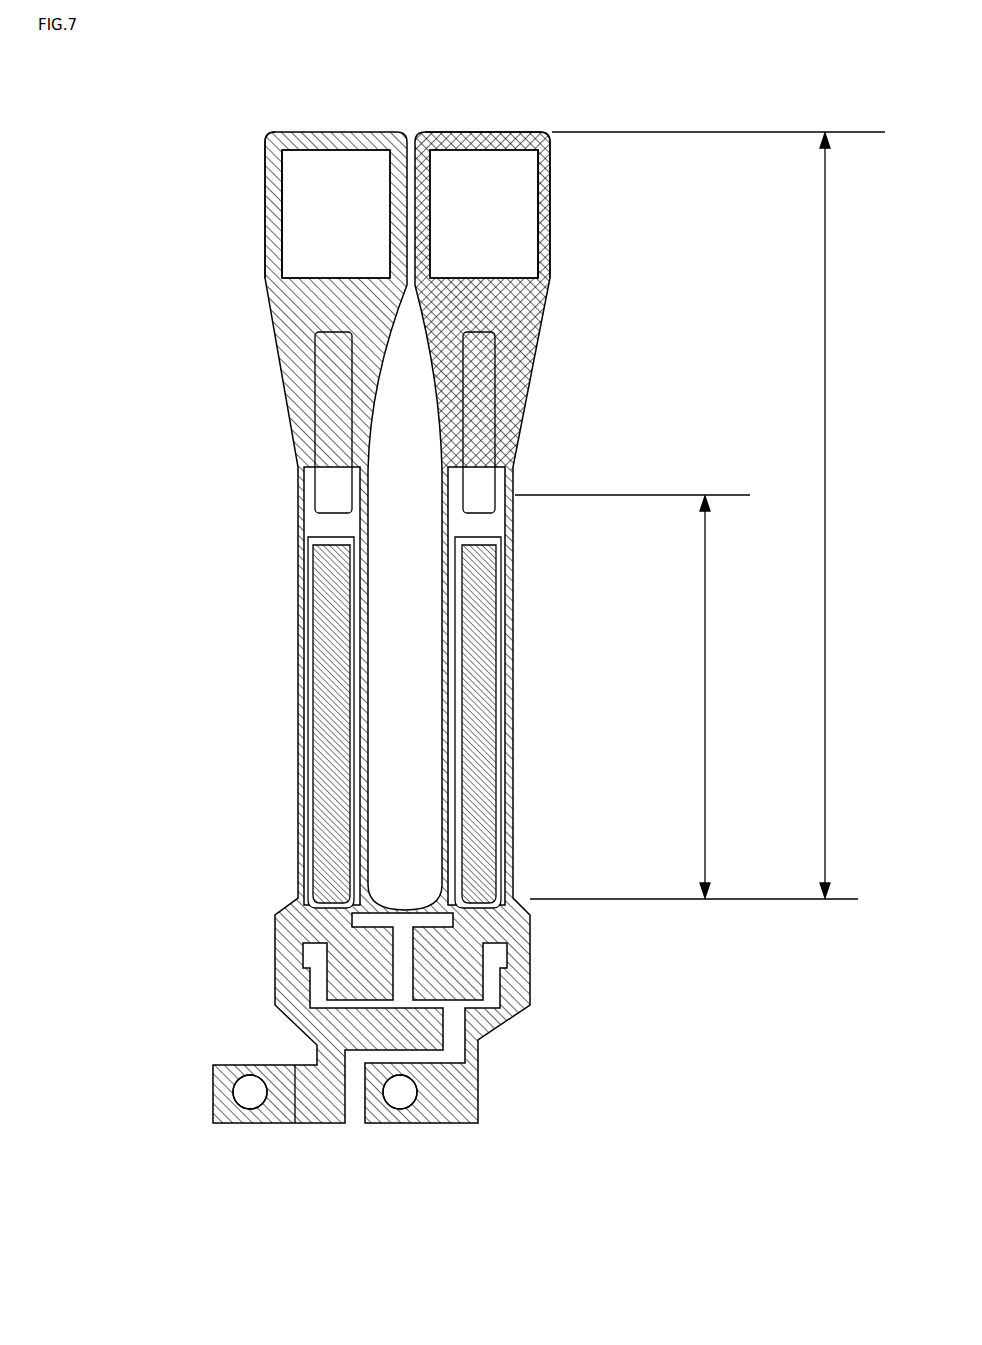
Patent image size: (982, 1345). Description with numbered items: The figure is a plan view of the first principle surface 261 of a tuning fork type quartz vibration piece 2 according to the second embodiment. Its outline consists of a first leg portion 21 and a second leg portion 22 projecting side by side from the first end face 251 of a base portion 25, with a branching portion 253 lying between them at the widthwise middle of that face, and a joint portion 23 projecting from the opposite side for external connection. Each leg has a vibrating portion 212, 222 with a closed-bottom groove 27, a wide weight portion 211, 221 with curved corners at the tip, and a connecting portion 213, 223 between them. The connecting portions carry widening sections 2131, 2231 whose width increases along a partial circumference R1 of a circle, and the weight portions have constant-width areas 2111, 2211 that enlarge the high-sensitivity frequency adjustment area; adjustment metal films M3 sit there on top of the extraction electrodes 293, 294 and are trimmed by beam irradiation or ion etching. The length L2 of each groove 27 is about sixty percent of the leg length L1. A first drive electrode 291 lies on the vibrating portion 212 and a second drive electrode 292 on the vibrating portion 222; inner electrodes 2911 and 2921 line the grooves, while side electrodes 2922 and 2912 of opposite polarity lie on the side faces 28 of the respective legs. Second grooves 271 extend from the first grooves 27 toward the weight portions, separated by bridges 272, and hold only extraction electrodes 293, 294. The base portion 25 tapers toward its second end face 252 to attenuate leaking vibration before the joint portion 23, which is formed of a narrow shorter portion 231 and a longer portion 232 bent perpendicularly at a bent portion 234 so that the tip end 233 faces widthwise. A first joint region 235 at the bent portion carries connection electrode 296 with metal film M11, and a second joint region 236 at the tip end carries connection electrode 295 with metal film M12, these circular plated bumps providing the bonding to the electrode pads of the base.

The tuning fork type quartz vibration piece 2 is at (206, 116).
The first leg portion 21 is at (528, 246).
The second leg portion 22 is at (300, 253).
The joint portion 23 is at (480, 1062).
The base portion 25 is at (468, 988).
The groove 27 is at (315, 566).
The side face 28 is at (303, 535).
The weight portion 211 is at (527, 220).
The vibrating portion 212 is at (448, 745).
The connecting portion 213 is at (495, 358).
The weight portion 221 is at (293, 227).
The vibrating portion 222 is at (322, 692).
The connecting portion 223 is at (310, 362).
The shorter portion 231 is at (433, 1053).
The longer portion 232 is at (297, 1098).
The tip end 233 is at (225, 1113).
The bent portion 234 is at (420, 1073).
The first joint region 235 is at (408, 1098).
The second joint region 236 is at (238, 1092).
The first end face 251 is at (440, 893).
The second end face 252 is at (483, 1043).
The branching portion 253 is at (402, 897).
The first principle surface 261 is at (470, 140).
The second groove 271 is at (330, 378).
The bridge 272 is at (325, 533).
The first drive electrode 291 is at (500, 648).
The second drive electrode 292 is at (323, 590).
The extraction electrode 293 is at (287, 130).
The extraction electrode 294 is at (532, 130).
The connection electrode 295 is at (248, 1075).
The connection electrode 296 is at (452, 1100).
The constant-width area 2111 is at (548, 193).
The widening section 2131 is at (538, 327).
The constant-width area 2211 is at (268, 170).
The widening section 2231 is at (315, 340).
The inner electrode 2911 is at (482, 617).
The side electrode 2912 is at (325, 712).
The inner electrode 2921 is at (318, 665).
The side electrode 2922 is at (513, 687).
The partial circumference R1 is at (283, 322).
The adjustment metal film M3 is at (362, 163).
The metal film M11 is at (397, 1100).
The metal film M12 is at (243, 1098).
The length of the leg portions L1 is at (707, 515).
The length of the groove L2 is at (635, 696).